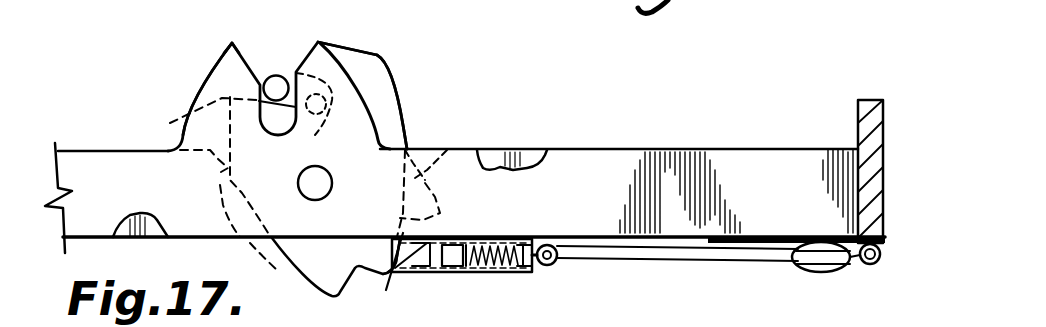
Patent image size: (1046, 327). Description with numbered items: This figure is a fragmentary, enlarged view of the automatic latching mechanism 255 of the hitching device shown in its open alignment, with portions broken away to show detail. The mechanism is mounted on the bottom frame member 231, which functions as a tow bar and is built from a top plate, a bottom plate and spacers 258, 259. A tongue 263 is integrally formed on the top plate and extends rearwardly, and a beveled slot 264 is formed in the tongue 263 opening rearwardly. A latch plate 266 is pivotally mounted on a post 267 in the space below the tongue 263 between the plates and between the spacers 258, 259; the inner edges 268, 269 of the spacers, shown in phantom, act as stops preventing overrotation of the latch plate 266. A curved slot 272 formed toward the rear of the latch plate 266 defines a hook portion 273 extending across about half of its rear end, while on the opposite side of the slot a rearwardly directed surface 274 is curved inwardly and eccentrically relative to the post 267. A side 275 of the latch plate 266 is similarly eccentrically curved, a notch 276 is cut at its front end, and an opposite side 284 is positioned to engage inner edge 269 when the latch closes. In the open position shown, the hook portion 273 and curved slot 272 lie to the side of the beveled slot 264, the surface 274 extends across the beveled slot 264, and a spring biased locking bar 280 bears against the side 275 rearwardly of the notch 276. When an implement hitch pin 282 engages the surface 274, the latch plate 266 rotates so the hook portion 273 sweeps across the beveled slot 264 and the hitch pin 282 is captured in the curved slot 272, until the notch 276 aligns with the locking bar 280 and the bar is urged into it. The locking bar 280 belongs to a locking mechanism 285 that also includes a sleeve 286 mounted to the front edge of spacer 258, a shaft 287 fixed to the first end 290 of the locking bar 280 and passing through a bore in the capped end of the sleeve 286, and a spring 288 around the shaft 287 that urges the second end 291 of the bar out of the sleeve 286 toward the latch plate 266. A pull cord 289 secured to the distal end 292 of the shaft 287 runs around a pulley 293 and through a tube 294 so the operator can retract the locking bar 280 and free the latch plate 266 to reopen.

The bottom frame member 231 is at (714, 148).
The automatic latching mechanism 255 is at (183, 76).
The spacer 258 is at (497, 150).
The spacer 259 is at (150, 240).
The tongue 263 is at (212, 60).
The beveled slot 264 is at (236, 46).
The latch plate 266 is at (411, 124).
The post 267 is at (296, 193).
The inner edge 268 is at (447, 152).
The inner edge 269 is at (218, 172).
The curved slot 272 is at (311, 115).
The hook portion 273 is at (343, 44).
The rearwardly directed surface 274 is at (178, 124).
The side 275 is at (446, 213).
The notch 276 is at (336, 282).
The locking bar 280 is at (383, 274).
The hitch pin 282 is at (267, 68).
The opposite side 284 is at (277, 272).
The locking mechanism 285 is at (532, 277).
The sleeve 286 is at (471, 276).
The shaft 287 is at (522, 272).
The spring 288 is at (520, 236).
The pull cord 289 is at (625, 260).
The first end 290 is at (463, 275).
The second end 291 is at (392, 247).
The distal end 292 is at (551, 243).
The pulley 293 is at (817, 273).
The tube 294 is at (880, 265).